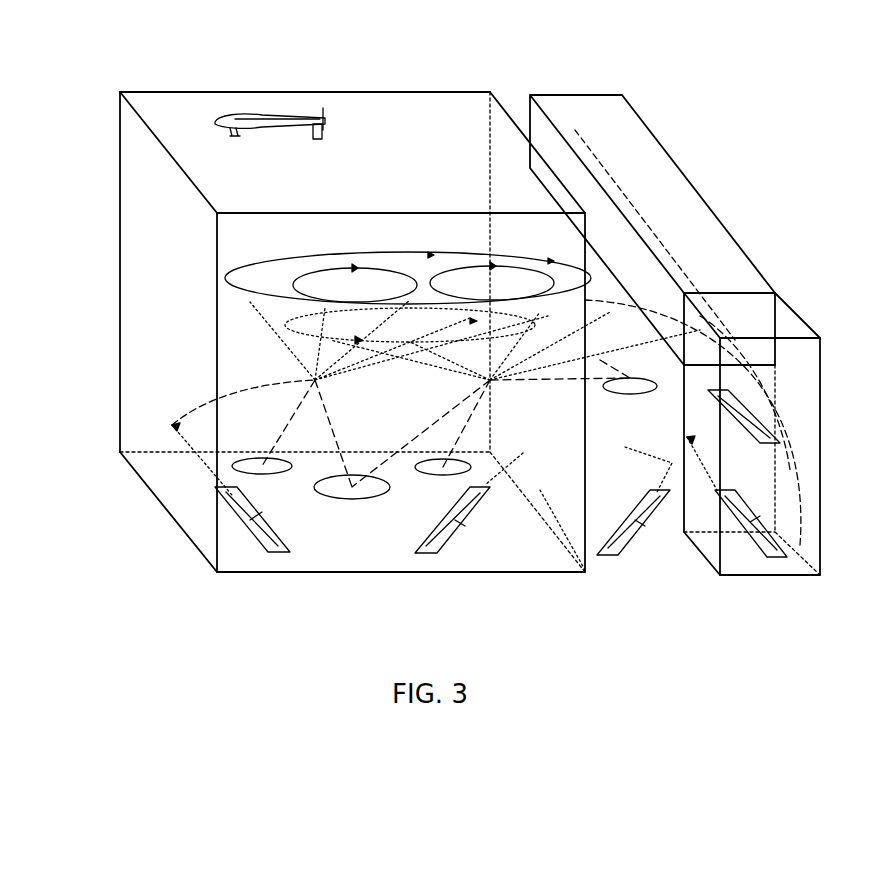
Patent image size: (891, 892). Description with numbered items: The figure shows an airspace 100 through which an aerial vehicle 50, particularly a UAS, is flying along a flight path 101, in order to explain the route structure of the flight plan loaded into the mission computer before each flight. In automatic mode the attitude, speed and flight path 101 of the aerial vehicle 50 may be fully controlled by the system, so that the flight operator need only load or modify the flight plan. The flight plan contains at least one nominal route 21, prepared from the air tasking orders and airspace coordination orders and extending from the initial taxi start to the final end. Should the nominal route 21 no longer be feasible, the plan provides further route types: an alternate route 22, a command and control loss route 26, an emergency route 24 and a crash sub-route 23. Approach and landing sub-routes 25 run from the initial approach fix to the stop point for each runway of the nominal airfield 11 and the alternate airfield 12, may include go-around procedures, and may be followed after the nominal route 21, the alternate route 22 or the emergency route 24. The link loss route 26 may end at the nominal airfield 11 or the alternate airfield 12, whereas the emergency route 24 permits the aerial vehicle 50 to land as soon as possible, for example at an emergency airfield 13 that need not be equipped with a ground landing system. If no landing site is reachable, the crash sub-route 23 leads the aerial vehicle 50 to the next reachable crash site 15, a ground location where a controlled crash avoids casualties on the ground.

The airspace 100 is at (152, 90).
The flight path 101 is at (640, 204).
The aerial vehicle 50 is at (258, 112).
The command and control loss route 26 is at (382, 194).
The nominal route 21 is at (440, 252).
The alternate route 22 is at (286, 322).
The crash sub-route 23 is at (302, 406).
The crash site 15 is at (262, 462).
The emergency route 24 is at (215, 396).
The approach and landing sub-route 25 is at (214, 466).
The alternate airfield 12 is at (272, 560).
The emergency airfield 13 is at (448, 560).
The nominal airfield 11 is at (775, 566).